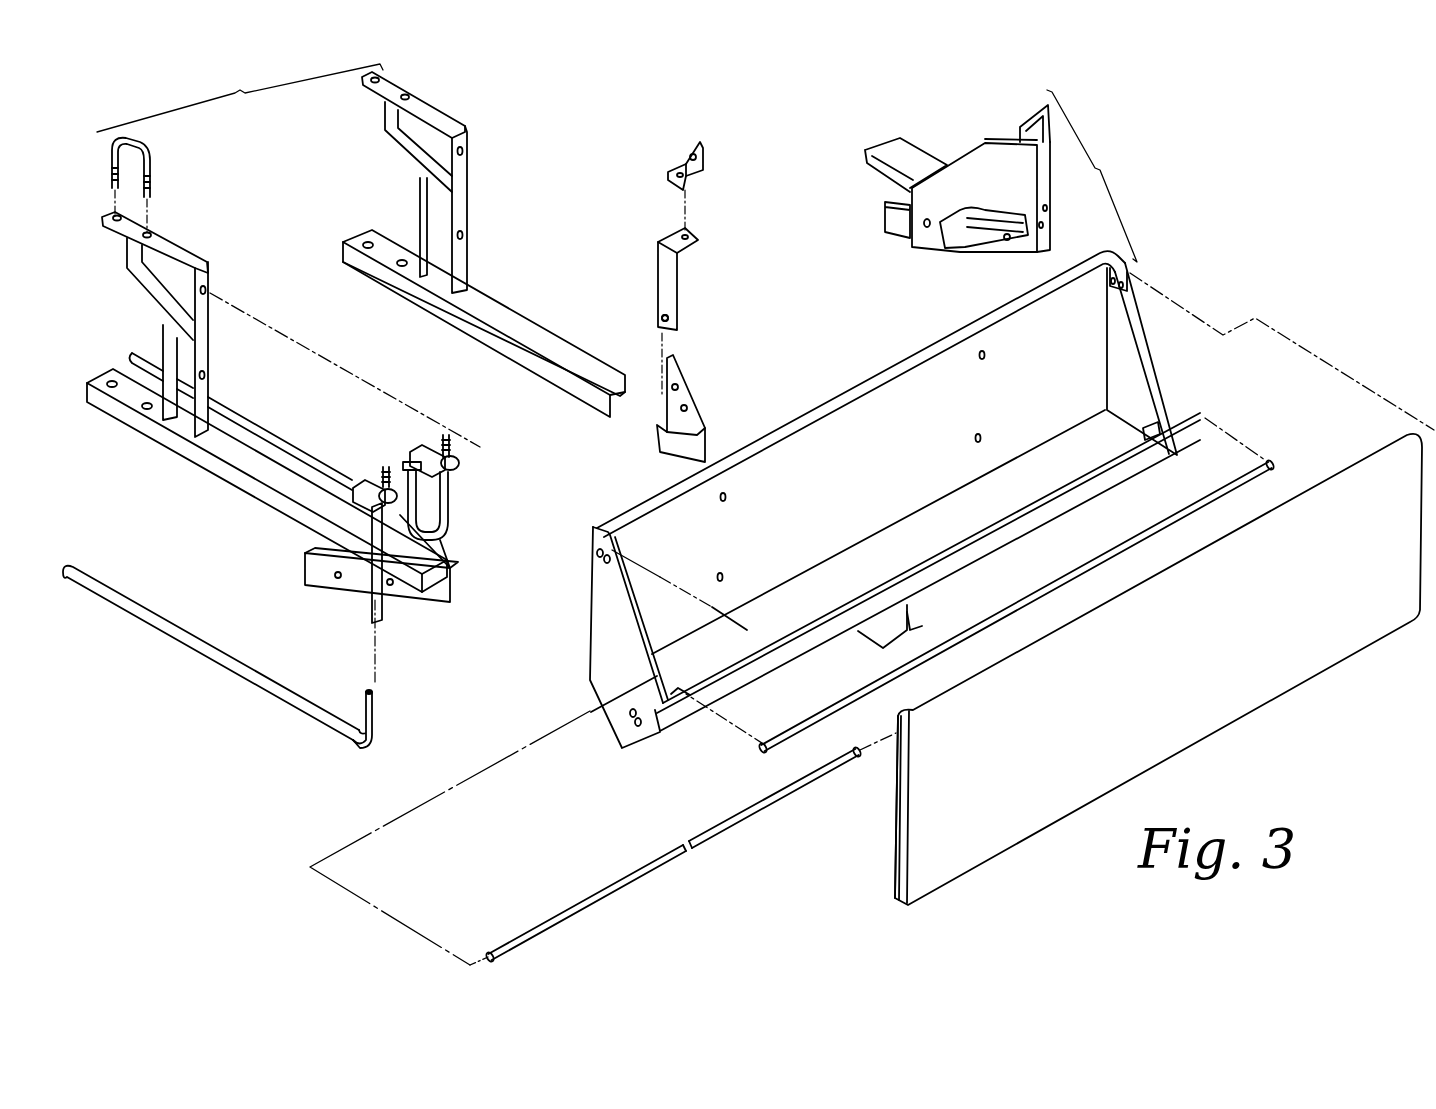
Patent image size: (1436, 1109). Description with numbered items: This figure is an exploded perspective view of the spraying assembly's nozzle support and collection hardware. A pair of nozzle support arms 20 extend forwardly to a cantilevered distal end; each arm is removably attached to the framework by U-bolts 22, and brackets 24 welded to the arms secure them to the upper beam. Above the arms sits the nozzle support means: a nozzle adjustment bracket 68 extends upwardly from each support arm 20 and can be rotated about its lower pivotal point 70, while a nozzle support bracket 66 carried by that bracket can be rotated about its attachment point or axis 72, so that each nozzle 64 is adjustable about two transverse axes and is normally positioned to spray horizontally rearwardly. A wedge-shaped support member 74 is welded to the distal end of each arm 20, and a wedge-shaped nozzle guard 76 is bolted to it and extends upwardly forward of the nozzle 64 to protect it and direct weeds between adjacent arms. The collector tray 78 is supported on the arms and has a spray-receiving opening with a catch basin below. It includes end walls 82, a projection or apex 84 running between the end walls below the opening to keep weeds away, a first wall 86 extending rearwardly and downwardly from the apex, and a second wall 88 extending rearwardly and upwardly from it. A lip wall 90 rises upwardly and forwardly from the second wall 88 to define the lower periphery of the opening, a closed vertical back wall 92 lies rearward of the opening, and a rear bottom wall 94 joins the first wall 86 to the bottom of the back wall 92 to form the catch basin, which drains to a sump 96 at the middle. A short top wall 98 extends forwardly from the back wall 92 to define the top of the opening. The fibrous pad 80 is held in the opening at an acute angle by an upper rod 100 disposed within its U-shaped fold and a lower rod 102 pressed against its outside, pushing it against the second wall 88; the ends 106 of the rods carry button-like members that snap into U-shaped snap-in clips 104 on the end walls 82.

The nozzle support arm 20 is at (555, 345).
The U-bolt 22 is at (153, 167).
The bracket 24 is at (198, 263).
The nozzle 64 is at (420, 455).
The nozzle support bracket 66 is at (353, 490).
The nozzle adjustment bracket 68 is at (378, 590).
The lower pivotal point 70 is at (660, 318).
The attachment point or axis 72 is at (688, 208).
The wedge-shaped support member 74 is at (410, 590).
The wedge-shaped nozzle guard 76 is at (993, 137).
The collector tray 78 is at (602, 757).
The fibrous pad 80 is at (897, 758).
The end wall 82 is at (870, 528).
The projection or apex 84 is at (672, 740).
The first wall 86 is at (622, 748).
The second wall 88 is at (802, 645).
The lip wall 90 is at (926, 555).
The back wall 92 is at (872, 445).
The rear bottom wall 94 is at (597, 698).
The sump 96 is at (915, 631).
The top wall 98 is at (900, 367).
The upper rod 100 is at (640, 875).
The lower rod 102 is at (1157, 528).
The snap-in clip 104 is at (1130, 286).
The rod end 106 is at (490, 953).